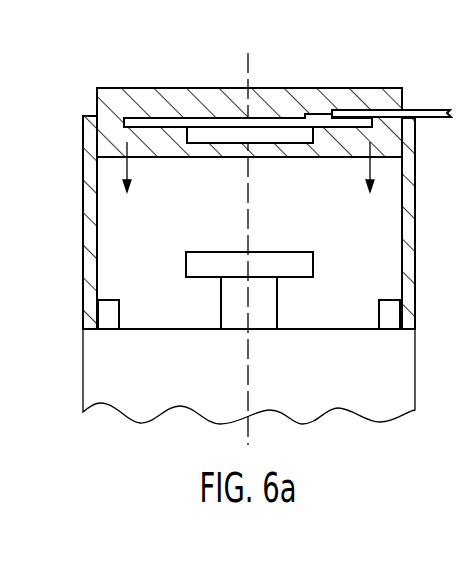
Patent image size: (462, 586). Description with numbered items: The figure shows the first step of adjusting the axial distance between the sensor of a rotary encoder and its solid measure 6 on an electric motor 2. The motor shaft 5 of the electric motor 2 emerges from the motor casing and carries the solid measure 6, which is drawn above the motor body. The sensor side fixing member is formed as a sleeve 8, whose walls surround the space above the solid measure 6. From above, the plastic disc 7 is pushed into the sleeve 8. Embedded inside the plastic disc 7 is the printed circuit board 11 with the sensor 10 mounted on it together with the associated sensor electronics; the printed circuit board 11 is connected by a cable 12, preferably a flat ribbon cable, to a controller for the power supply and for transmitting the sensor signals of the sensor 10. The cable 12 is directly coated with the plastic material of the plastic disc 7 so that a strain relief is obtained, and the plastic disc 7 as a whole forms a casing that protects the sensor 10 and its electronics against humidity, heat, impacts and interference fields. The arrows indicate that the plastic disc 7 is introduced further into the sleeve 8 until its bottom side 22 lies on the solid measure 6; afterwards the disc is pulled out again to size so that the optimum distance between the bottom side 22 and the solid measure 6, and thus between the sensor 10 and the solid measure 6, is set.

The electric motor 2 is at (87, 387).
The motor shaft 5 is at (268, 322).
The solid measure 6 is at (186, 263).
The plastic disc 7 is at (368, 101).
The sleeve 8 is at (408, 232).
The sensor 10 is at (270, 134).
The printed circuit board 11 is at (137, 119).
The cable 12 is at (430, 110).
The bottom side of the plastic disc 22 is at (374, 156).